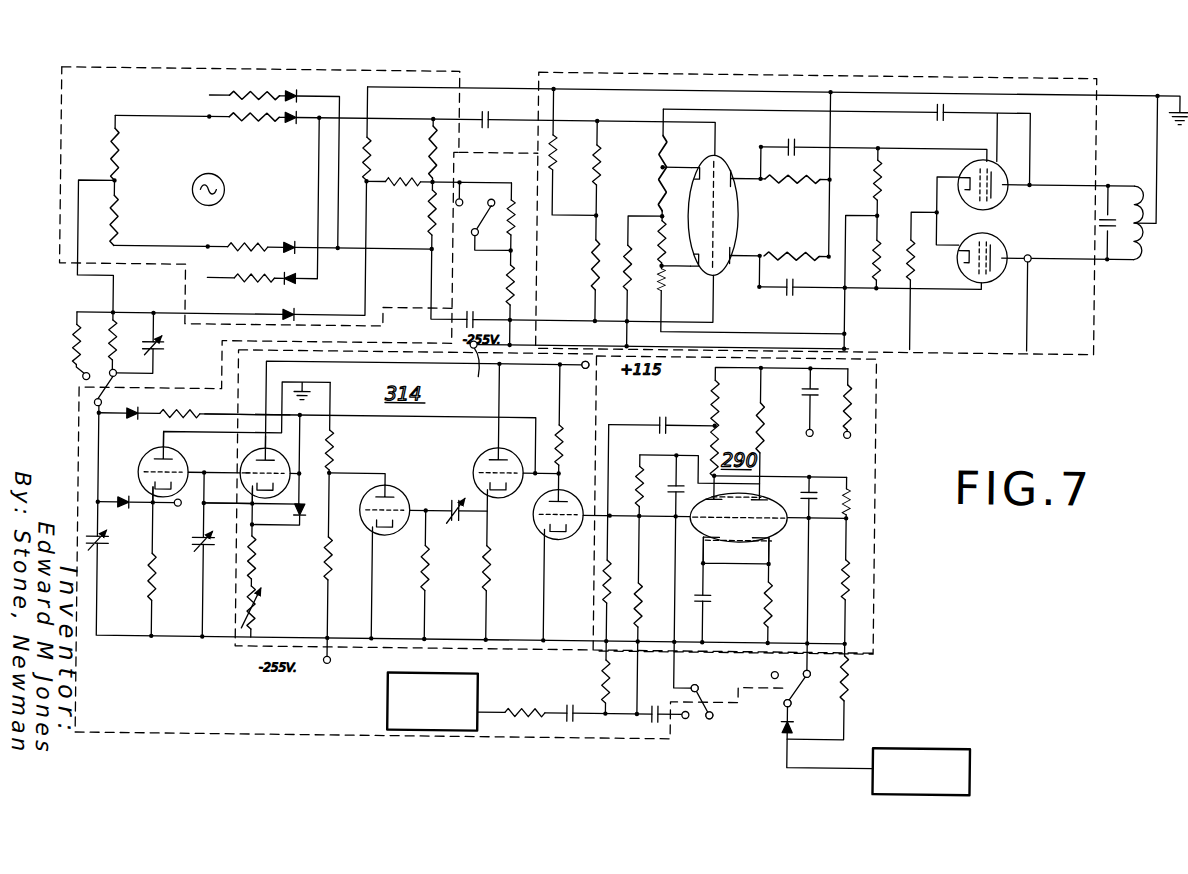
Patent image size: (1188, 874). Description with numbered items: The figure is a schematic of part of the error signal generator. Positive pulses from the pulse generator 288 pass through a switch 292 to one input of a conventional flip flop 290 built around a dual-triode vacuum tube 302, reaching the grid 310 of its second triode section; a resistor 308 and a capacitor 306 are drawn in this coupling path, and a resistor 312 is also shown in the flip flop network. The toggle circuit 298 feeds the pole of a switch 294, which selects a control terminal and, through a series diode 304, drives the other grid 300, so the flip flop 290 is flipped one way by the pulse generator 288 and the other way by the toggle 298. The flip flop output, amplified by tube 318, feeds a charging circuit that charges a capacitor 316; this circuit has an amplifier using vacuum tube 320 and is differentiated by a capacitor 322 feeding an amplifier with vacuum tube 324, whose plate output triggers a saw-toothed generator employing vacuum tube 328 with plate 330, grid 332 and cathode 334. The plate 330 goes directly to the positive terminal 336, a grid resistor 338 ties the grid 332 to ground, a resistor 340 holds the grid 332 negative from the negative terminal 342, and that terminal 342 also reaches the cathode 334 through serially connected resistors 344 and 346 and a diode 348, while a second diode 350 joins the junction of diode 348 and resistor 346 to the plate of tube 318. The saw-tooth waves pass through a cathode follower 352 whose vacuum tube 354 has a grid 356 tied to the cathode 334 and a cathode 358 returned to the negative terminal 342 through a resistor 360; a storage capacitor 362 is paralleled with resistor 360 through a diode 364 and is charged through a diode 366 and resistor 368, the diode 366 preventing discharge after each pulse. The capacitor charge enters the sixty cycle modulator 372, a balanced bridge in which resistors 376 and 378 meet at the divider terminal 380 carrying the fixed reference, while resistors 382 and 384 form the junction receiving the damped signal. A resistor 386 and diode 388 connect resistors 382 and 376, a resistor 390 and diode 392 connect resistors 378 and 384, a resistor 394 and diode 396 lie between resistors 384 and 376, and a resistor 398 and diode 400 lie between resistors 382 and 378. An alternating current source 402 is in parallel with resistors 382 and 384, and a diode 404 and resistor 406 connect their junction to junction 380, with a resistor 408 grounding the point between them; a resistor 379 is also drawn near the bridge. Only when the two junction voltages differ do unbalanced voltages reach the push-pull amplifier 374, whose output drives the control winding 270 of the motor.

The control winding 270 is at (1132, 255).
The pulse generator 288 is at (442, 663).
The flip flop 290 is at (714, 428).
The switch 292 is at (706, 695).
The switch 294 is at (789, 706).
The toggle circuit 298 is at (972, 745).
The grid 300 is at (778, 527).
The vacuum tube 302 is at (776, 494).
The diode 304 is at (794, 724).
The capacitor 306 is at (578, 723).
The resistor 308 is at (527, 713).
The grid 310 is at (702, 532).
The resistor 312 is at (660, 588).
The capacitor 316 is at (205, 551).
The vacuum tube 318 is at (565, 542).
The vacuum tube 320 is at (505, 452).
The capacitor 322 is at (455, 526).
The vacuum tube 324 is at (430, 479).
The vacuum tube 328 is at (241, 477).
The plate 330 is at (264, 456).
The grid 332 is at (254, 493).
The cathode 334 is at (229, 483).
The positive terminal 336 is at (589, 369).
The grid resistor 338 is at (334, 451).
The resistor 340 is at (333, 563).
The negative terminal 342 is at (331, 667).
The resistor 344 is at (257, 603).
The resistor 346 is at (256, 561).
The diode 348 is at (251, 510).
The second diode 350 is at (300, 519).
The cathode follower 352 is at (212, 412).
The vacuum tube 354 is at (139, 477).
The grid 356 is at (139, 462).
The cathode 358 is at (139, 495).
The resistor 360 is at (153, 586).
The storage capacitor 362 is at (101, 552).
The diode 364 is at (125, 513).
The diode 366 is at (133, 422).
The resistor 368 is at (203, 418).
The 60 cycle modulator 372 is at (194, 63).
The push-pull amplifier 374 is at (910, 135).
The resistor 376 is at (433, 153).
The resistor 378 is at (432, 217).
The resistor 379 is at (117, 338).
The divider terminal 380 is at (445, 182).
The resistor 382 is at (111, 139).
The resistor 384 is at (115, 230).
The resistor 386 is at (249, 122).
The diode 388 is at (288, 127).
The resistor 390 is at (243, 249).
The diode 392 is at (289, 246).
The resistor 394 is at (251, 282).
The diode 396 is at (294, 284).
The resistor 398 is at (256, 97).
The diode 400 is at (297, 95).
The alternating current potential source 402 is at (193, 185).
The diode 404 is at (289, 314).
The resistor 406 is at (410, 171).
The resistor 408 is at (368, 143).